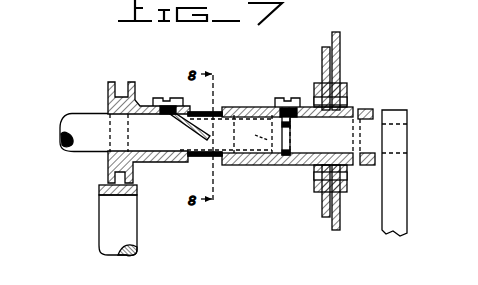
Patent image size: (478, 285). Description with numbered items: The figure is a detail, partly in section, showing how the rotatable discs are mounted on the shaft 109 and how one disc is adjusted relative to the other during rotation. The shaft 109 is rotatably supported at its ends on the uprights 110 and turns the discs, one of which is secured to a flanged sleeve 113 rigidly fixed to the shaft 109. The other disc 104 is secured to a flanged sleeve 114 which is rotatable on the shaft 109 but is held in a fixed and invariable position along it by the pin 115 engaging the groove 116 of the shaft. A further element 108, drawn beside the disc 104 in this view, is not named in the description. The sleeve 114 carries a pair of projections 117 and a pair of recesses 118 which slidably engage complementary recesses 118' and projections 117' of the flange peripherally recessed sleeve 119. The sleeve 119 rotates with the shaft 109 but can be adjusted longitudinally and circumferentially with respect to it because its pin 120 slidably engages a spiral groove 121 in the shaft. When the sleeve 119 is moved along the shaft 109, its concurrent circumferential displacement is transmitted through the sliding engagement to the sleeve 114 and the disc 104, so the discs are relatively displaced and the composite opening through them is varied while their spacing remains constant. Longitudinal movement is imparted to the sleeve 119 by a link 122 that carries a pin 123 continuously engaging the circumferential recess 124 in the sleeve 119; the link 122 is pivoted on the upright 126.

The disc 104 is at (322, 55).
The bolt 108 is at (340, 44).
The shaft 109 is at (345, 143).
The upright 110 is at (396, 207).
The flanged sleeve 113 is at (367, 110).
The flanged sleeve 114 is at (300, 164).
The pin 115 is at (278, 100).
The groove 116 is at (289, 130).
The projections 117 is at (287, 126).
The projections 117' is at (201, 100).
The recesses 118 is at (291, 145).
The recesses 118' is at (202, 166).
The sleeve 119 is at (108, 104).
The pin 120 is at (162, 97).
The spiral groove 121 is at (188, 127).
The link 122 is at (112, 195).
The pin 123 is at (125, 177).
The circumferential recess 124 is at (128, 71).
The upright 126 is at (128, 231).